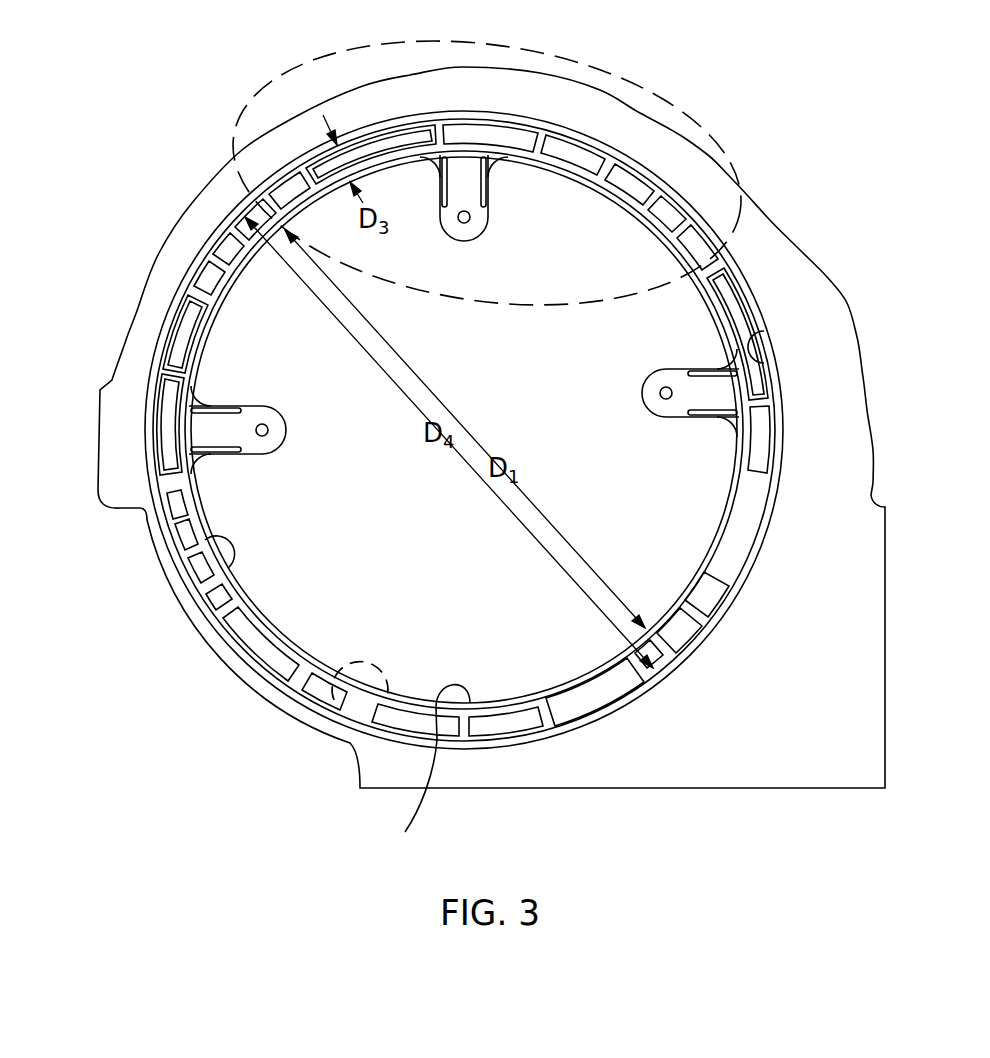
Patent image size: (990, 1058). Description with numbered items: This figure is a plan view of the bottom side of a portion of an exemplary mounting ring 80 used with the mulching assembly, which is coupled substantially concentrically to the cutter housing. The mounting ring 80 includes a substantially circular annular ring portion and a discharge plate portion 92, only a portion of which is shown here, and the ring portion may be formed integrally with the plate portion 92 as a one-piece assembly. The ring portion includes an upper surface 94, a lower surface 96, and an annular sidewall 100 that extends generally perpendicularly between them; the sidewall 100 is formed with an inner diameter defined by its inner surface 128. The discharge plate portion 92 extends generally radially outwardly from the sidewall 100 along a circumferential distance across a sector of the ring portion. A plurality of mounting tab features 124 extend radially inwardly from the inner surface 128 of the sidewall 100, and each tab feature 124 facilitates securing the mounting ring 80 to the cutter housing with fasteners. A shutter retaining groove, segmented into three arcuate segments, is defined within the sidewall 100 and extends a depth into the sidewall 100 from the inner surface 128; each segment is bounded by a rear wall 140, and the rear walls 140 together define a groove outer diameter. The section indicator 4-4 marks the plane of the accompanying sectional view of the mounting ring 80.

The mounting ring 80 is at (218, 652).
The discharge plate portion 92 is at (850, 622).
The upper surface 94 is at (315, 728).
The lower surface 96 is at (742, 293).
The sidewall 100 is at (417, 766).
The mounting tab features 124 is at (468, 240).
The inner surface 128 is at (755, 363).
The rear wall 140 is at (567, 168).
The section line 4-4 is at (652, 93).